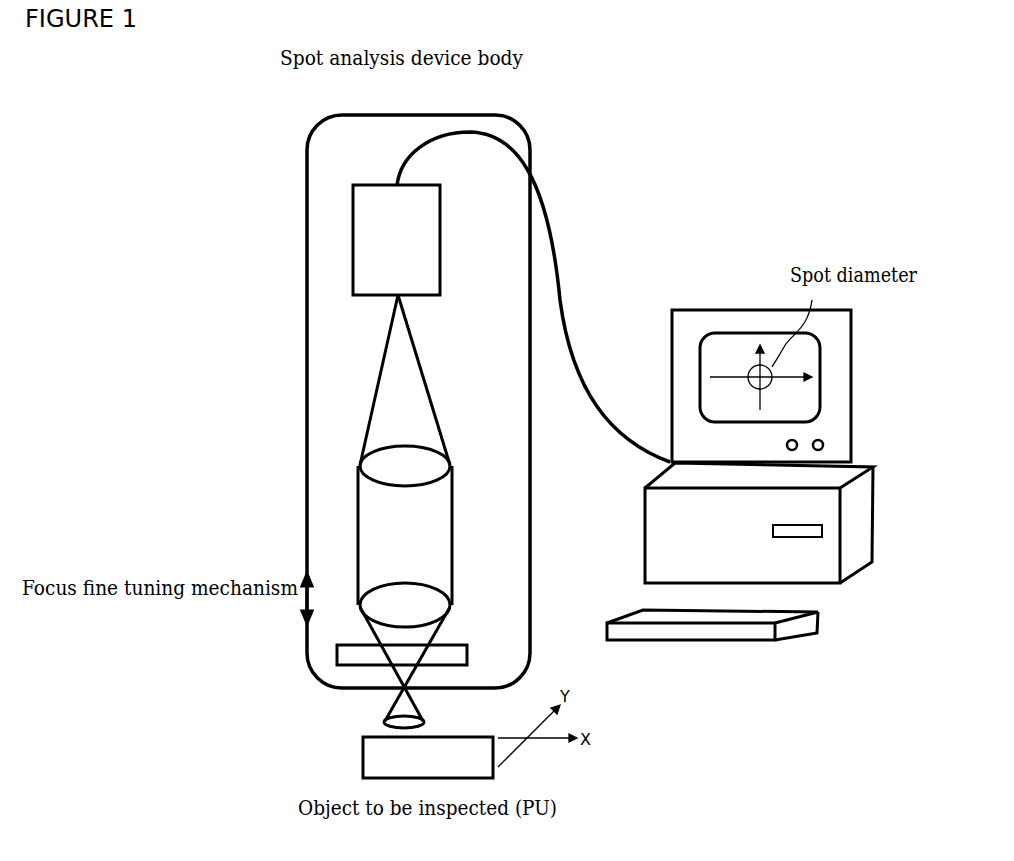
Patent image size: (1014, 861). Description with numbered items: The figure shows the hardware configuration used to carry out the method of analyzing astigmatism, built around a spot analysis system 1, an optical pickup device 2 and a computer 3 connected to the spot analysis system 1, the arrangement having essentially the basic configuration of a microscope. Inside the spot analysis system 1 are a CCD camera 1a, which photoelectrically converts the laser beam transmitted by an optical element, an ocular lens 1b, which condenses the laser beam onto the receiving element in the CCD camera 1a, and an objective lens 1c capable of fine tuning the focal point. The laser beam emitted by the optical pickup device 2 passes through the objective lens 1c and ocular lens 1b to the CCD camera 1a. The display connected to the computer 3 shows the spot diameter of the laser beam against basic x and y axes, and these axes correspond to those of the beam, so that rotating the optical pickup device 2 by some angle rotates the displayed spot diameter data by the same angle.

The spot analysis system 1 is at (527, 148).
The CCD camera 1a is at (442, 232).
The ocular lens 1b is at (424, 447).
The objective lens 1c is at (411, 582).
The optical pickup device 2 is at (442, 738).
The computer 3 is at (737, 283).